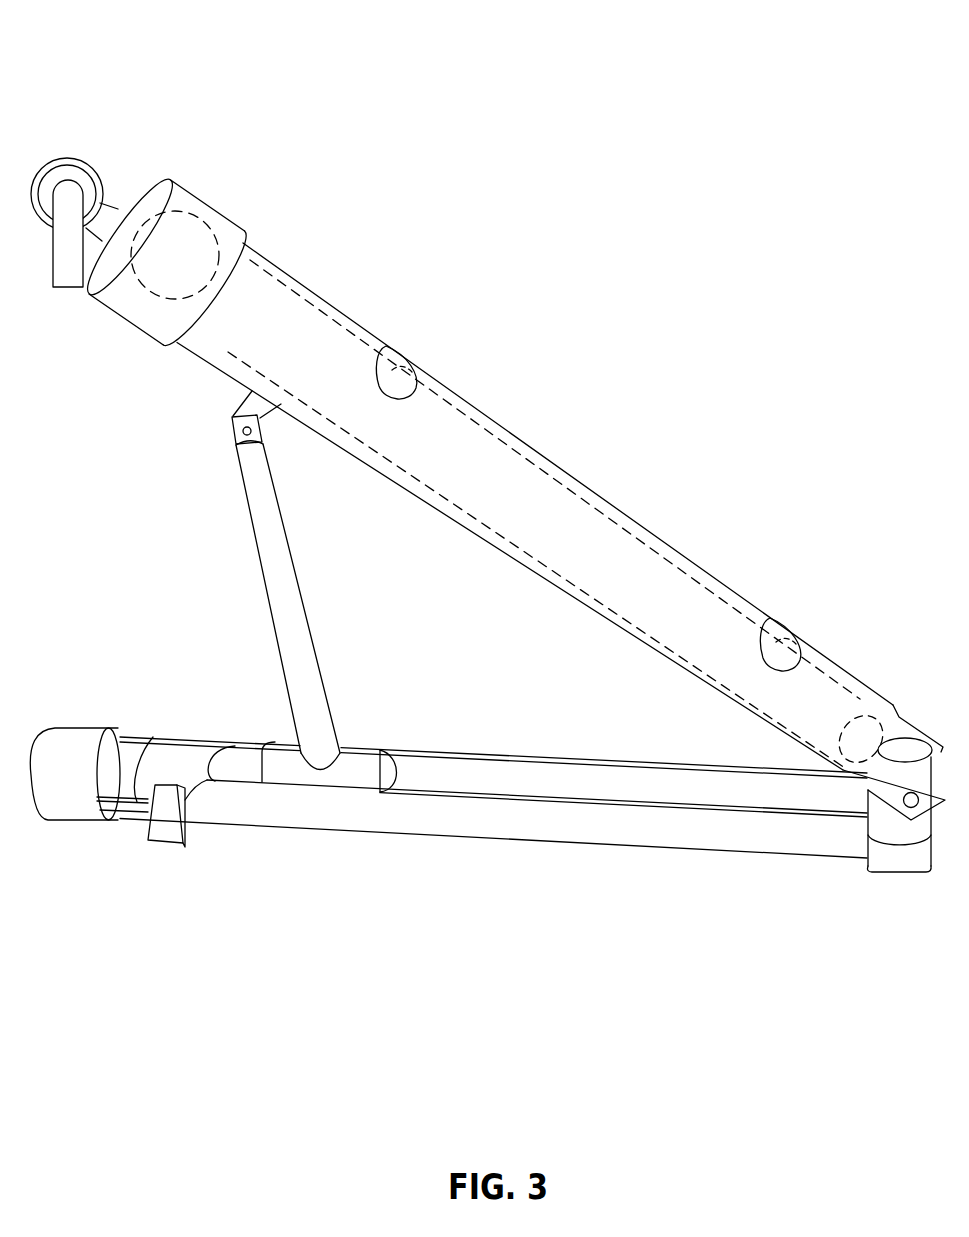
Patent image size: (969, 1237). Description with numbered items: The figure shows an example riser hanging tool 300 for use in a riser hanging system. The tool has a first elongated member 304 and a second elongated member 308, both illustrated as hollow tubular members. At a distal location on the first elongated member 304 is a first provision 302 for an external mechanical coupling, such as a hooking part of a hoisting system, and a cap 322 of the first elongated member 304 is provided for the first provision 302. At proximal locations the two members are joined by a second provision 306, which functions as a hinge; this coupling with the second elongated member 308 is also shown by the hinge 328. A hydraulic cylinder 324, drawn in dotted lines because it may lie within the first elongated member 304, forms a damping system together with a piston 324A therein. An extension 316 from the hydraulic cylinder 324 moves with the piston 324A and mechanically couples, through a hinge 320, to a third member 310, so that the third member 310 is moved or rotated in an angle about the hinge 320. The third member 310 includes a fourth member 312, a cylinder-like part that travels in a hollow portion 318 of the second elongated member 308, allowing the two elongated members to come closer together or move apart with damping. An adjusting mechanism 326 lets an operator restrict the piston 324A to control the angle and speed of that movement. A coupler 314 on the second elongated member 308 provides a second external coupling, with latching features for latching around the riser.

The riser hanging tool 300 is at (835, 102).
The first provision 302 is at (93, 166).
The first elongated member 304 is at (522, 440).
The second provision 306 is at (908, 740).
The second elongated member 308 is at (502, 757).
The third member 310 is at (306, 603).
The fourth member 312 is at (384, 750).
The coupler 314 is at (175, 744).
The extension 316 is at (230, 413).
The hollow portion 318 is at (590, 797).
The hinge 320 is at (232, 431).
The cap 322 is at (222, 208).
The hydraulic cylinder 324 is at (442, 402).
The piston 324A is at (326, 313).
The adjusting mechanism 326 is at (855, 736).
The hinge 328 is at (880, 795).